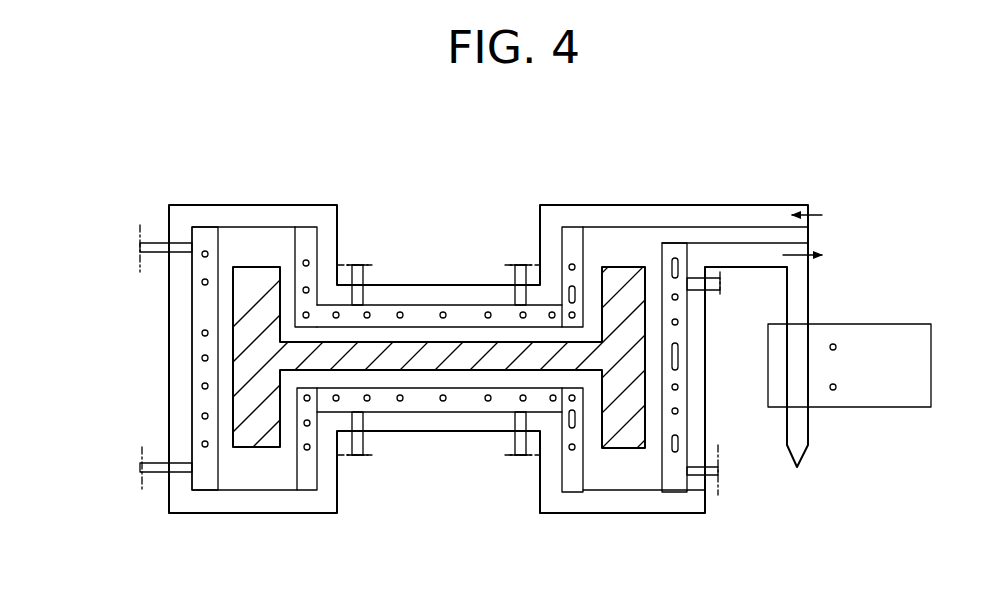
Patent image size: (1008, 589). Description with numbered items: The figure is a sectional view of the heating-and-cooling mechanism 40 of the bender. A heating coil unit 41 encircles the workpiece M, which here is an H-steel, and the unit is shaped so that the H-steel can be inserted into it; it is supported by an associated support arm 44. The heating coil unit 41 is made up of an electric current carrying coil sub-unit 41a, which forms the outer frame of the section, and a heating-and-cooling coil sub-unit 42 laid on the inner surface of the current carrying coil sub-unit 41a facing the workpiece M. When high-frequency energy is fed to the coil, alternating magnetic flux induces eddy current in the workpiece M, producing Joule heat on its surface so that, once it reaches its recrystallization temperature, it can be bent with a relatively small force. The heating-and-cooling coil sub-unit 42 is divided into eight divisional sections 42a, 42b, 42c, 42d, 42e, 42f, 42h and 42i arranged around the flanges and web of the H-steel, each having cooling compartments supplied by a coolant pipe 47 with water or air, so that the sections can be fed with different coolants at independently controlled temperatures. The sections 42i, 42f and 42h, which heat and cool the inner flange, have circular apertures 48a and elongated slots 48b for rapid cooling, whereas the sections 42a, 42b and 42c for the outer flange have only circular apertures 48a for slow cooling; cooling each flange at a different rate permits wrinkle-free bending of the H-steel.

The heating-and-cooling mechanism 40 is at (456, 232).
The heating coil unit 41 is at (275, 203).
The electric current carrying coil sub-unit 41a is at (308, 504).
The heating-and-cooling coil sub-unit 42 is at (463, 365).
The divisional section 42a is at (205, 367).
The divisional section 42b is at (315, 237).
The divisional section 42c is at (310, 467).
The divisional section 42d is at (470, 312).
The divisional section 42e is at (428, 401).
The divisional section 42f is at (580, 240).
The divisional section 42h is at (572, 476).
The divisional section 42i is at (676, 423).
The support arm 44 is at (872, 346).
The coolant pipe 47 is at (150, 244).
The circular apertures 48a is at (677, 389).
The elongated slots 48b is at (672, 454).
The workpiece M is at (237, 311).